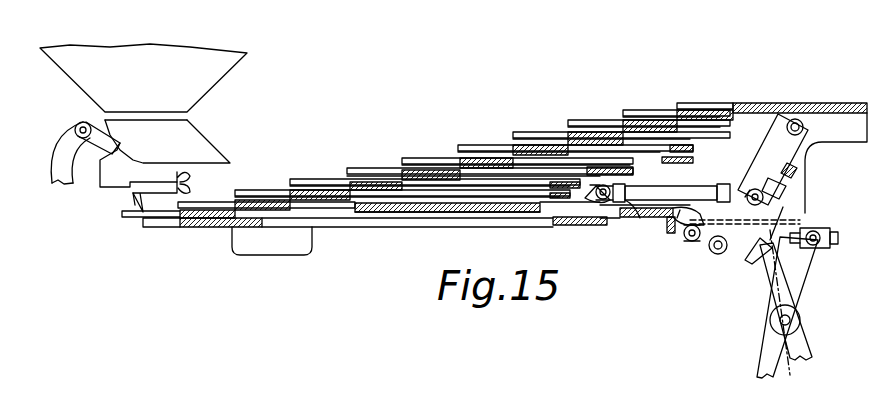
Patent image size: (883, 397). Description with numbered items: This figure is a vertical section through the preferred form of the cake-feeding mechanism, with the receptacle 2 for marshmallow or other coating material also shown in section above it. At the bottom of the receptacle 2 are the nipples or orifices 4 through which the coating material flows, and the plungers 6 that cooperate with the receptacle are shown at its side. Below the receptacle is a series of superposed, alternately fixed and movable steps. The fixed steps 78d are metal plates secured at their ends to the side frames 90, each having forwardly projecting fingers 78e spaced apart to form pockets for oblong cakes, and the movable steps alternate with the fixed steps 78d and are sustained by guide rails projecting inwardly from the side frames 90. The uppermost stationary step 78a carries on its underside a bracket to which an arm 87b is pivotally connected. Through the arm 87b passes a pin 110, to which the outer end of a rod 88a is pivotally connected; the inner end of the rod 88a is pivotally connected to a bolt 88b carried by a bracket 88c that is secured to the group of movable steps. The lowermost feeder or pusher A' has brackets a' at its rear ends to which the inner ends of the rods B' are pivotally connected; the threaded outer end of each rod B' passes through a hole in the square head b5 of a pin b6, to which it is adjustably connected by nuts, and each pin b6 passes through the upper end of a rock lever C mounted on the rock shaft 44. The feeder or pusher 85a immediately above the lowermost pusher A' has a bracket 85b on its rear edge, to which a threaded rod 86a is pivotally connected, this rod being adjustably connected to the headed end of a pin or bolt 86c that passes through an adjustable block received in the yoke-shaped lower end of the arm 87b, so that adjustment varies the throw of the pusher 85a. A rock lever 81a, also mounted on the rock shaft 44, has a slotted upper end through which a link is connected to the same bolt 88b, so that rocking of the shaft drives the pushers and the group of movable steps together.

The receptacle 2 is at (207, 80).
The nipples or orifices 4 is at (135, 202).
The plungers 6 is at (102, 150).
The side frames 90 is at (297, 237).
The fixed steps 78d is at (740, 80).
The forwardly projecting fingers 78e is at (577, 133).
The uppermost stationary step 78a is at (820, 103).
The rod 88a is at (663, 205).
The bolt 88b is at (608, 200).
The bracket 88c is at (578, 228).
The pin 110 is at (730, 186).
The feeder or pusher 85a is at (640, 218).
The bracket 85b is at (677, 218).
The threaded rod 86a is at (692, 242).
The pin or bolt 86c is at (783, 207).
The arm 87b is at (783, 145).
The rock lever 81a is at (767, 287).
The rock shaft 44 is at (800, 320).
The square head b5 is at (810, 230).
The pin b6 is at (830, 233).
The rock lever C is at (810, 282).
The lowermost feeder or pusher A' is at (587, 224).
The rods B' is at (721, 257).
The brackets a' is at (708, 267).